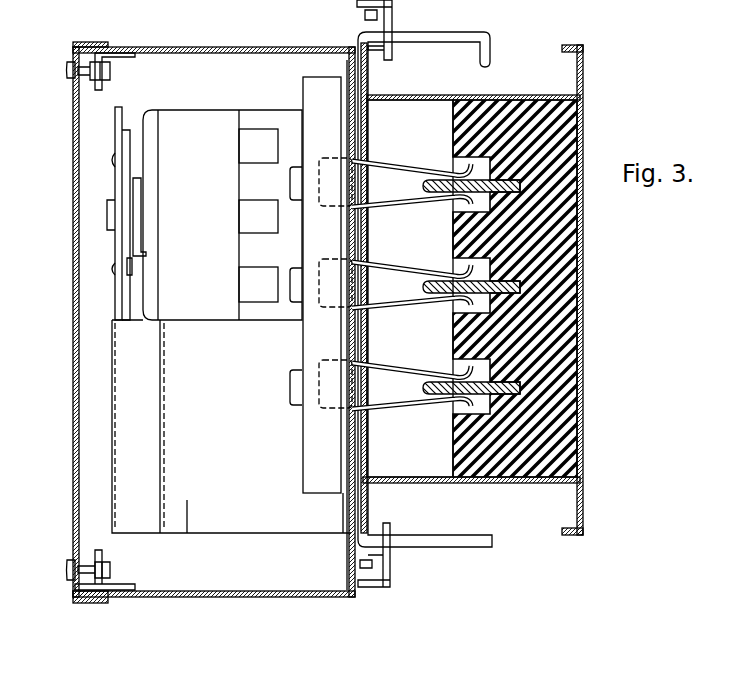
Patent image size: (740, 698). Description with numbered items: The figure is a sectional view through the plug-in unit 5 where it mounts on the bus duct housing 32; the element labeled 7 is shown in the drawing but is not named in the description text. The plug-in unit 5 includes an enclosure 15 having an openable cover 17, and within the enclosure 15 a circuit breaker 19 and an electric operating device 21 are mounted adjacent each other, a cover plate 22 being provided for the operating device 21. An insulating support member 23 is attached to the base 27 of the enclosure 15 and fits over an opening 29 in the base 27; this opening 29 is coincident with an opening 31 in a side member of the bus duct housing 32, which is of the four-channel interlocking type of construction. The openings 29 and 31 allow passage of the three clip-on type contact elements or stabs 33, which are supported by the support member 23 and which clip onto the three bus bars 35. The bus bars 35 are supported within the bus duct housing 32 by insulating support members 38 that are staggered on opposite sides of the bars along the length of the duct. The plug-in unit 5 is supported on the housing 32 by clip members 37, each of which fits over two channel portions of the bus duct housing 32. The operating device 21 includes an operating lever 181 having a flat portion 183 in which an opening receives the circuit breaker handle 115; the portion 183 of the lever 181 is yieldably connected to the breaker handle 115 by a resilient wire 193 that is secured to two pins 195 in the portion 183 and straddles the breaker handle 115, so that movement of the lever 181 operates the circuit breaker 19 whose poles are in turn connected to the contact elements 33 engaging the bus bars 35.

The plug-in unit 5 is at (251, 573).
The connector housing 7 is at (405, 248).
The enclosure 15 is at (217, 48).
The openable cover 17 is at (75, 453).
The circuit breaker 19 is at (204, 200).
The electric operating device 21 is at (236, 410).
The cover plate 22 is at (187, 520).
The insulating support member 23 is at (334, 245).
The base 27 is at (351, 92).
The opening 29 is at (349, 136).
The opening 31 is at (368, 140).
The bus duct housing 32 is at (408, 96).
The contact elements 33 is at (421, 170).
The bus bars 35 is at (445, 190).
The clip members 37 is at (358, 37).
The insulating support members 38 is at (560, 277).
The circuit breaker handle 115 is at (112, 203).
The operating lever 181 is at (119, 308).
The flat portion 183 is at (120, 284).
The resilient wire 193 is at (127, 240).
The pins 195 is at (113, 160).